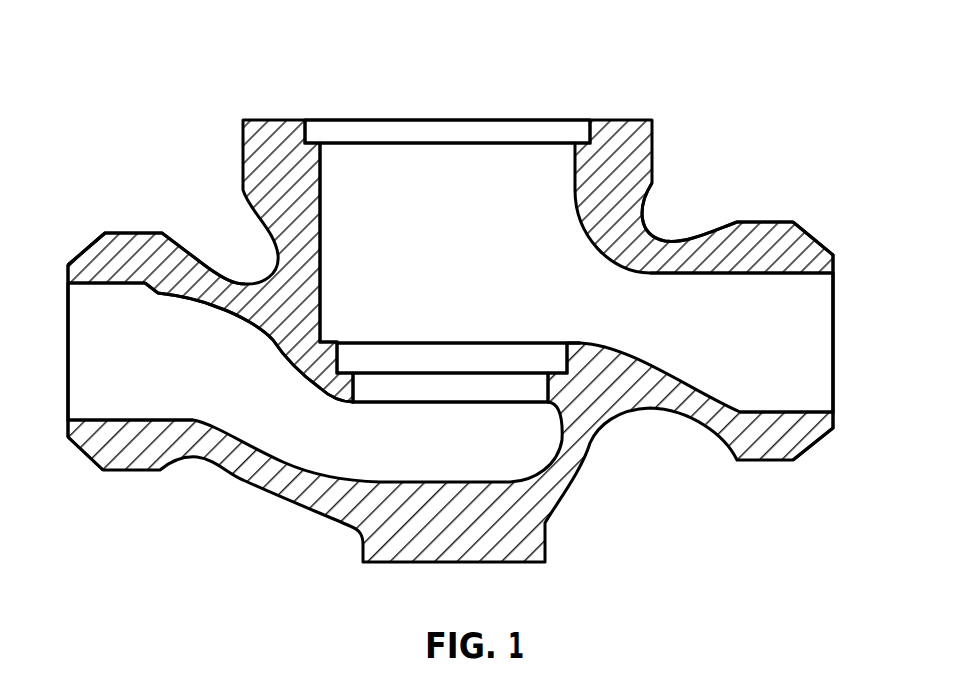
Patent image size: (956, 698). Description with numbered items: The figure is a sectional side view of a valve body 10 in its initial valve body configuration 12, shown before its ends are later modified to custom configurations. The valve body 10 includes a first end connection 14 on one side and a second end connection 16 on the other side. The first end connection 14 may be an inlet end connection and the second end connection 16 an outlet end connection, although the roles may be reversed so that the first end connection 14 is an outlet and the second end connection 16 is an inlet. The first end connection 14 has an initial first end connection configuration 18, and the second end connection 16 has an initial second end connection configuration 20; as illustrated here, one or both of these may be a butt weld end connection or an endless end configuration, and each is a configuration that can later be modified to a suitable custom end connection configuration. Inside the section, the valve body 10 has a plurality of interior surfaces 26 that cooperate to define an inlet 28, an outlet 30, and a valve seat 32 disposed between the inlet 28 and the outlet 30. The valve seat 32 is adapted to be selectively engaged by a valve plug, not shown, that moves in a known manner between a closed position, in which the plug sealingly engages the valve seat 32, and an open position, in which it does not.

The valve body 10 is at (301, 79).
The initial valve body configuration 12 is at (621, 73).
The first end connection 14 is at (91, 200).
The second end connection 16 is at (767, 182).
The initial first end connection configuration 18 is at (64, 236).
The initial second end connection configuration 20 is at (842, 211).
The interior surfaces 26 is at (183, 296).
The inlet 28 is at (83, 341).
The outlet 30 is at (810, 348).
The valve seat 32 is at (471, 314).